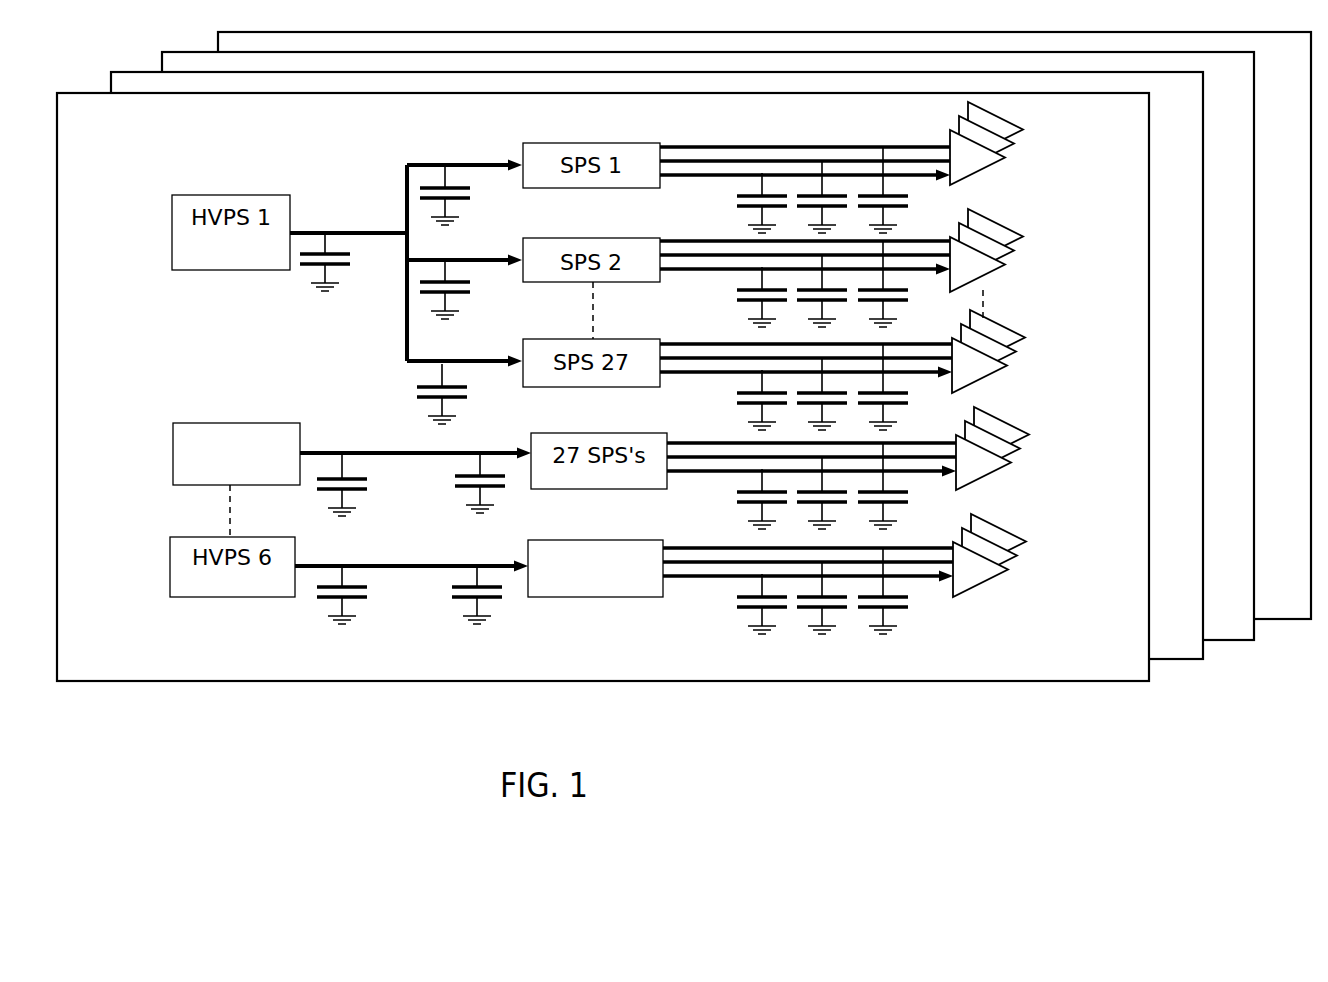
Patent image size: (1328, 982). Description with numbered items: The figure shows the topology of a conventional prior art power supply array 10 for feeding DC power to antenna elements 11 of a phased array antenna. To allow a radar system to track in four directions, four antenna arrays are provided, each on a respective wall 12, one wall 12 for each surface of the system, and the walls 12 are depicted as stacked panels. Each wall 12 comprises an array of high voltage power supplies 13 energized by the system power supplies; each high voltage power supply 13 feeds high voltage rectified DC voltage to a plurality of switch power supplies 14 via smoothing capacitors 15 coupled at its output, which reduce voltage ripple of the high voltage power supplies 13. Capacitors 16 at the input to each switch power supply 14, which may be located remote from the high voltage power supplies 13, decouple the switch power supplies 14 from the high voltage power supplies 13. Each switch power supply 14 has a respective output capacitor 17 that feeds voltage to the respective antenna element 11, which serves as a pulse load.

The power supply array 10 is at (685, 389).
The antenna element 11 is at (990, 522).
The wall 12 is at (1122, 625).
The high voltage power supply 13 is at (196, 423).
The switch power supply 14 is at (663, 586).
The smoothing capacitor 15 is at (364, 489).
The capacitor 16 is at (505, 486).
The output capacitor 17 is at (908, 611).